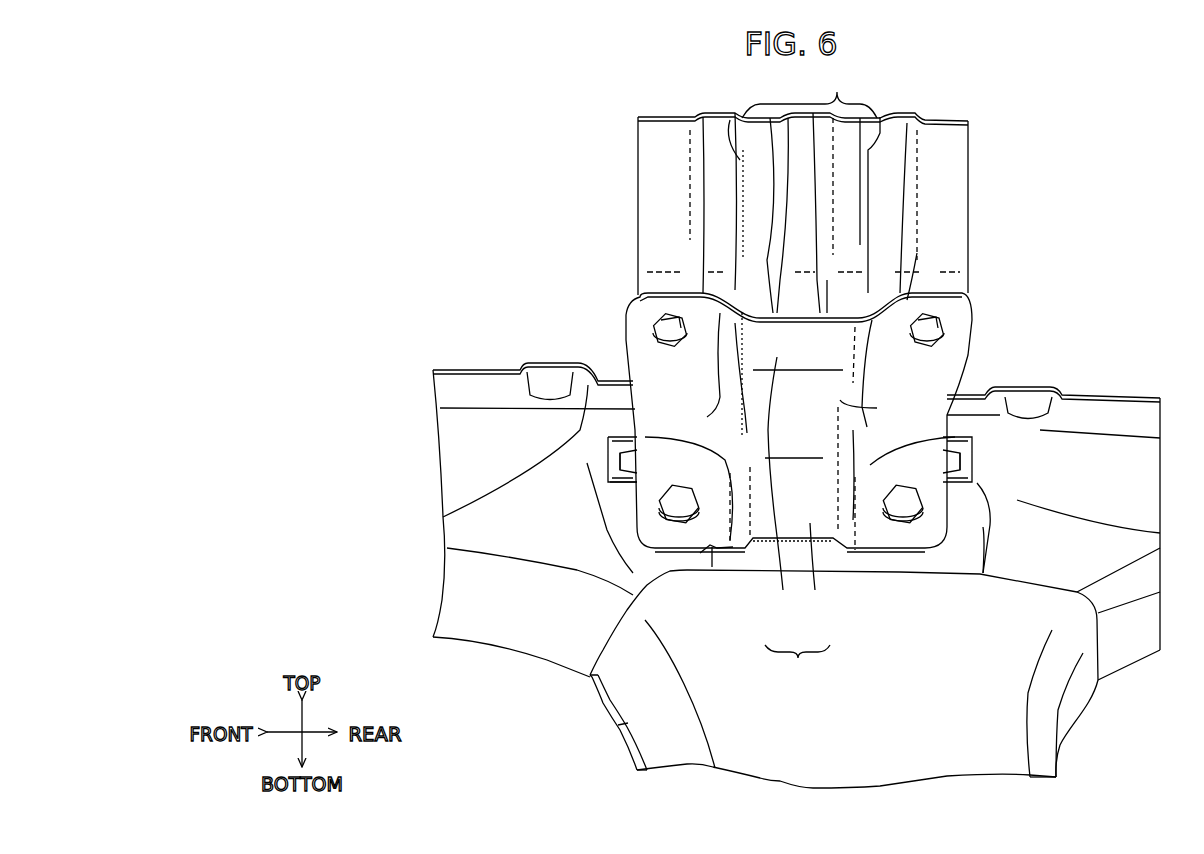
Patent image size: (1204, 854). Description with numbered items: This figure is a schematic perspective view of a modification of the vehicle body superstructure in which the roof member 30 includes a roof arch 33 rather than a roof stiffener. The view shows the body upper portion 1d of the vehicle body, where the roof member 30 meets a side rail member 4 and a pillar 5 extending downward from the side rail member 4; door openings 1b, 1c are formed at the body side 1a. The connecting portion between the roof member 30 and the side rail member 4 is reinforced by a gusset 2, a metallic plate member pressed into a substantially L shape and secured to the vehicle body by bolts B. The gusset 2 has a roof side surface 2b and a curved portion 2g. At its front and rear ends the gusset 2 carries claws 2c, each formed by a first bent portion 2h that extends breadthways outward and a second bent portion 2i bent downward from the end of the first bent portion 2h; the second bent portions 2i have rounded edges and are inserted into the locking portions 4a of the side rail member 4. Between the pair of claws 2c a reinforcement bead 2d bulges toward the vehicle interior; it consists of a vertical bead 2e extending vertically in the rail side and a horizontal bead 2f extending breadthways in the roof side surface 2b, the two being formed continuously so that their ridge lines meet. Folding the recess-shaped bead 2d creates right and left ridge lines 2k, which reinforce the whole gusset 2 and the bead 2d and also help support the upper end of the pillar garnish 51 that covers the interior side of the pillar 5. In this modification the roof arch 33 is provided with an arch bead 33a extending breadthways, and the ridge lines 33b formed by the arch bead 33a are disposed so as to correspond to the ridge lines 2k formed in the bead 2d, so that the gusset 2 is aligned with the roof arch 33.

The body side 1a is at (1117, 713).
The door opening 1b is at (602, 710).
The door opening 1c is at (1060, 769).
The body upper portion 1d is at (457, 643).
The gusset 2 is at (973, 308).
The roof side surface 2b is at (650, 362).
The claw 2c is at (593, 483).
The bead 2d is at (797, 661).
The vertical bead 2e is at (813, 592).
The horizontal bead 2f is at (785, 592).
The curved portion 2g is at (897, 430).
The first bent portion 2h is at (610, 457).
The second bent portion 2i is at (623, 483).
The ridge line 2k is at (733, 343).
The side rail member 4 is at (1023, 377).
The locking portion 4a is at (610, 447).
The pillar 5 is at (630, 752).
The roof member 30 is at (623, 170).
The roof arch 33 is at (968, 148).
The arch bead 33a is at (809, 93).
The ridge line 33b is at (743, 223).
The pillar garnish 51 is at (948, 745).
The bolt B is at (653, 337).